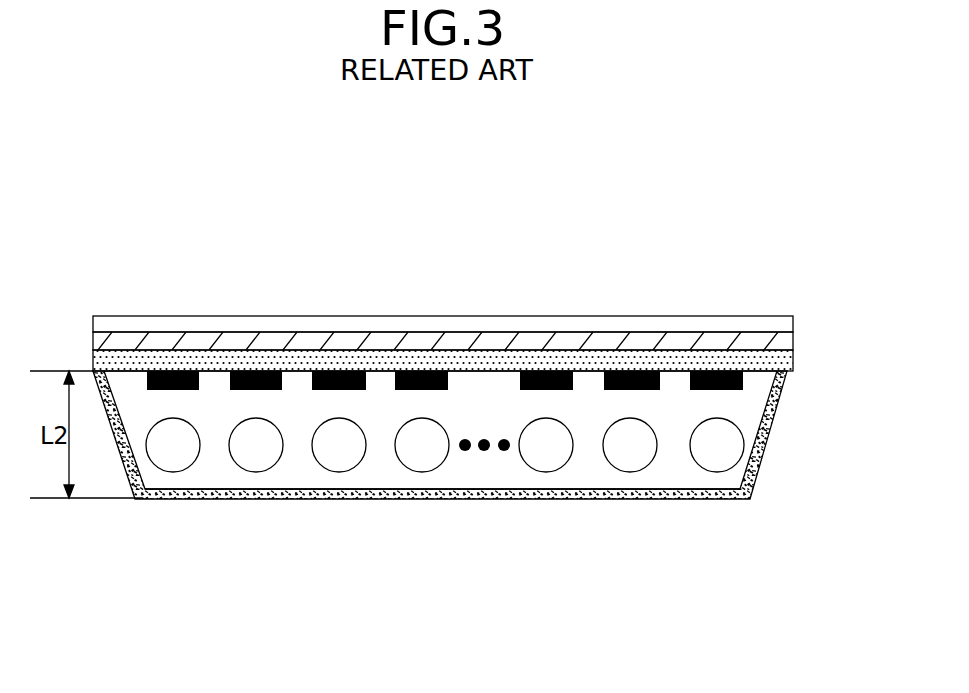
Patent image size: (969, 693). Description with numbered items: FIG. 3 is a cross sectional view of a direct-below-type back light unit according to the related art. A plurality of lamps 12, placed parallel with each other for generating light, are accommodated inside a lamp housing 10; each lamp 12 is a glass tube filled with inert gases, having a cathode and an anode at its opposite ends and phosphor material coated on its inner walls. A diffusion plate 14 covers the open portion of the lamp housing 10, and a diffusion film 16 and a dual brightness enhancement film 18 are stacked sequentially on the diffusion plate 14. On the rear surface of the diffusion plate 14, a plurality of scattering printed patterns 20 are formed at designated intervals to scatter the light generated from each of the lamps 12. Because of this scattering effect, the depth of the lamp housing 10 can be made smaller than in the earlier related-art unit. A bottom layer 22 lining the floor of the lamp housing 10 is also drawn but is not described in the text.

The lamp housing 10 is at (777, 428).
The lamps 12 is at (732, 461).
The diffusion plate 14 is at (777, 366).
The diffusion film 16 is at (777, 344).
The dual brightness enhancement film 18 is at (777, 325).
The scattering printed patterns 20 is at (648, 371).
The reflection plate 22 is at (755, 496).